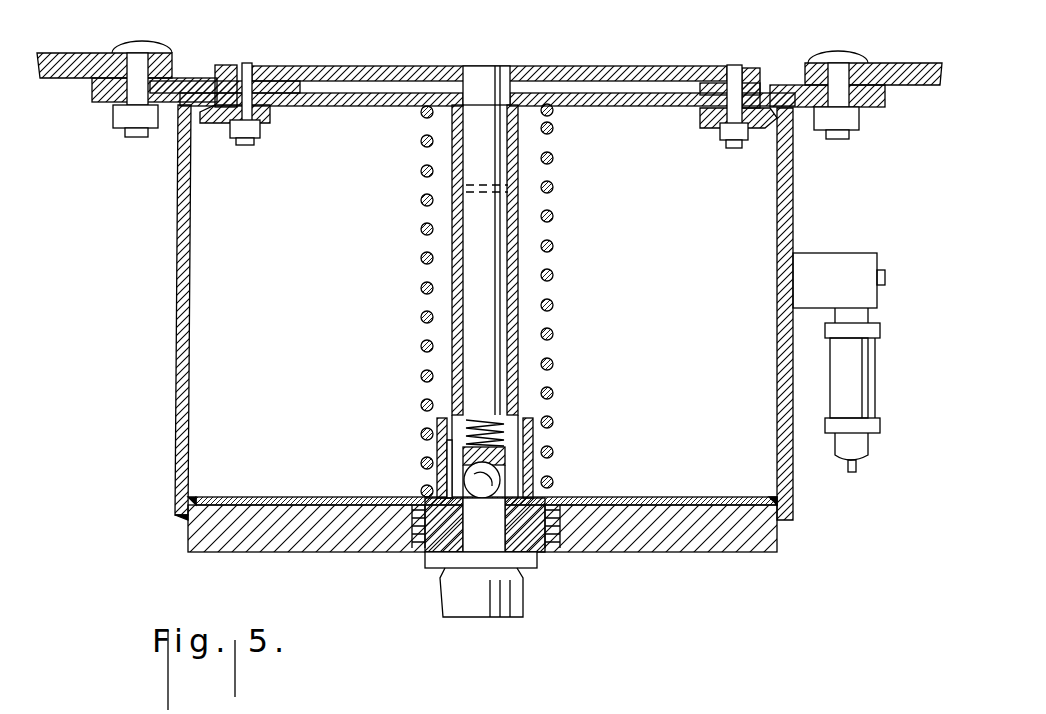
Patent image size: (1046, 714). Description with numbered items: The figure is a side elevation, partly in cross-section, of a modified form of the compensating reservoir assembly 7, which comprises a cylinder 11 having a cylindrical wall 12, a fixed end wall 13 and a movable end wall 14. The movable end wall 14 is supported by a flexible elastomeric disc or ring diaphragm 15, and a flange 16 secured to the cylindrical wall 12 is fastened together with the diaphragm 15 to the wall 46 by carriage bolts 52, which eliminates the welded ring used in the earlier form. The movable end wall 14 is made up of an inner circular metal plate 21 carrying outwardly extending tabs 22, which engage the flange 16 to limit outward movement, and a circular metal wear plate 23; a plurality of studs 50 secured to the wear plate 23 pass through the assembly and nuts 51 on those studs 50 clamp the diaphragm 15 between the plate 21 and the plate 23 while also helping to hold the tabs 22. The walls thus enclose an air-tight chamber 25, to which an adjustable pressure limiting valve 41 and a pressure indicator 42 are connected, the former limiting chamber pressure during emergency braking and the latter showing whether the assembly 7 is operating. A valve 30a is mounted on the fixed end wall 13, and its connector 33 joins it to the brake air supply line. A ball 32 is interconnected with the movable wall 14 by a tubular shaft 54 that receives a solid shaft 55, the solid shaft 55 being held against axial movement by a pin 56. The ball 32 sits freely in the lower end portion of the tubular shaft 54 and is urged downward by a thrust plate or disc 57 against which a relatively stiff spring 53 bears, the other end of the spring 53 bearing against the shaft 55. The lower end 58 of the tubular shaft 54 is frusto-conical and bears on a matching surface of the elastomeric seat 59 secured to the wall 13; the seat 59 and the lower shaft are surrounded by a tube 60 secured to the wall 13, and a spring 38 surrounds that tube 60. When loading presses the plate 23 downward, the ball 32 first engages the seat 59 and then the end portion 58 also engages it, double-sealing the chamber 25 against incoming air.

The compensating reservoir assembly 7 is at (628, 30).
The cylinder 11 is at (168, 343).
The cylindrical wall 12 is at (191, 300).
The fixed end wall 13 is at (188, 546).
The movable end wall 14 is at (395, 114).
The elastomeric disc or ring diaphragm 15 is at (290, 80).
The flange 16 is at (95, 103).
The inner circular metal plate 21 is at (612, 106).
The tabs 22 is at (272, 115).
The wear plate 23 is at (378, 68).
The air-tight chamber 25 is at (670, 381).
The valve 30a is at (410, 478).
The ball 32 is at (505, 457).
The connector 33 is at (525, 560).
The spring 38 is at (558, 247).
The adjustable pressure limiting valve 41 is at (868, 400).
The pressure indicator 42 is at (888, 278).
The wall 46 is at (78, 55).
The studs 50 is at (264, 68).
The nuts 51 is at (258, 130).
The carriage bolts 52 is at (148, 42).
The spring 53 is at (510, 416).
The tubular shaft 54 is at (520, 318).
The solid shaft 55 is at (470, 298).
The pin 56 is at (518, 190).
The thrust plate or disc 57 is at (455, 452).
The lower end 58 is at (532, 485).
The elastomeric seat 59 is at (552, 492).
The tube 60 is at (440, 418).